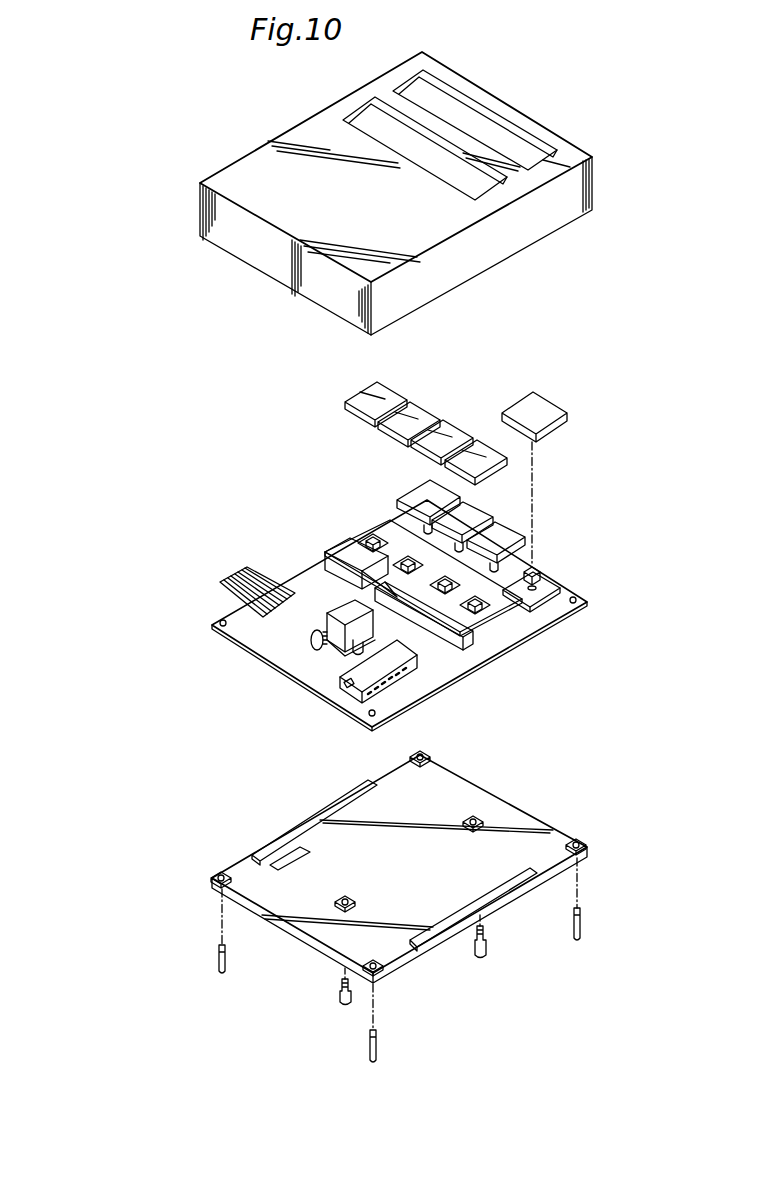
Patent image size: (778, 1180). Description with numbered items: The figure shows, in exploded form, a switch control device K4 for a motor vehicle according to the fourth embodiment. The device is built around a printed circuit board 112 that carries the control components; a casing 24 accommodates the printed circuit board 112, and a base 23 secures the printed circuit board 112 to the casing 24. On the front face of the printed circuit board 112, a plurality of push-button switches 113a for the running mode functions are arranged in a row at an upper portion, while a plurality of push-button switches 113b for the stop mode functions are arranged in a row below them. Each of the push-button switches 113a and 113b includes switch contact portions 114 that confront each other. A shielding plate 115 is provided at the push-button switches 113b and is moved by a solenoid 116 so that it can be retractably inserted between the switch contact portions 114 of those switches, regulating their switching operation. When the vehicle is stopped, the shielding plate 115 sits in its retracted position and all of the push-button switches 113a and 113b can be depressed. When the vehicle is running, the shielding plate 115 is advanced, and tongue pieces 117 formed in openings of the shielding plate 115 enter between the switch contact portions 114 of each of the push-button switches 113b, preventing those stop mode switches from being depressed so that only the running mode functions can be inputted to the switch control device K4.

The switch control device K4 is at (160, 514).
The casing 24 is at (543, 133).
The base 23 is at (457, 795).
The printed circuit board 112 is at (307, 580).
The push-button switches 113a is at (480, 512).
The push-button switches 113b is at (377, 430).
The switch contact portions 114 is at (546, 590).
The shielding plate 115 is at (418, 600).
The solenoid 116 is at (340, 650).
The tongue pieces 117 is at (500, 613).